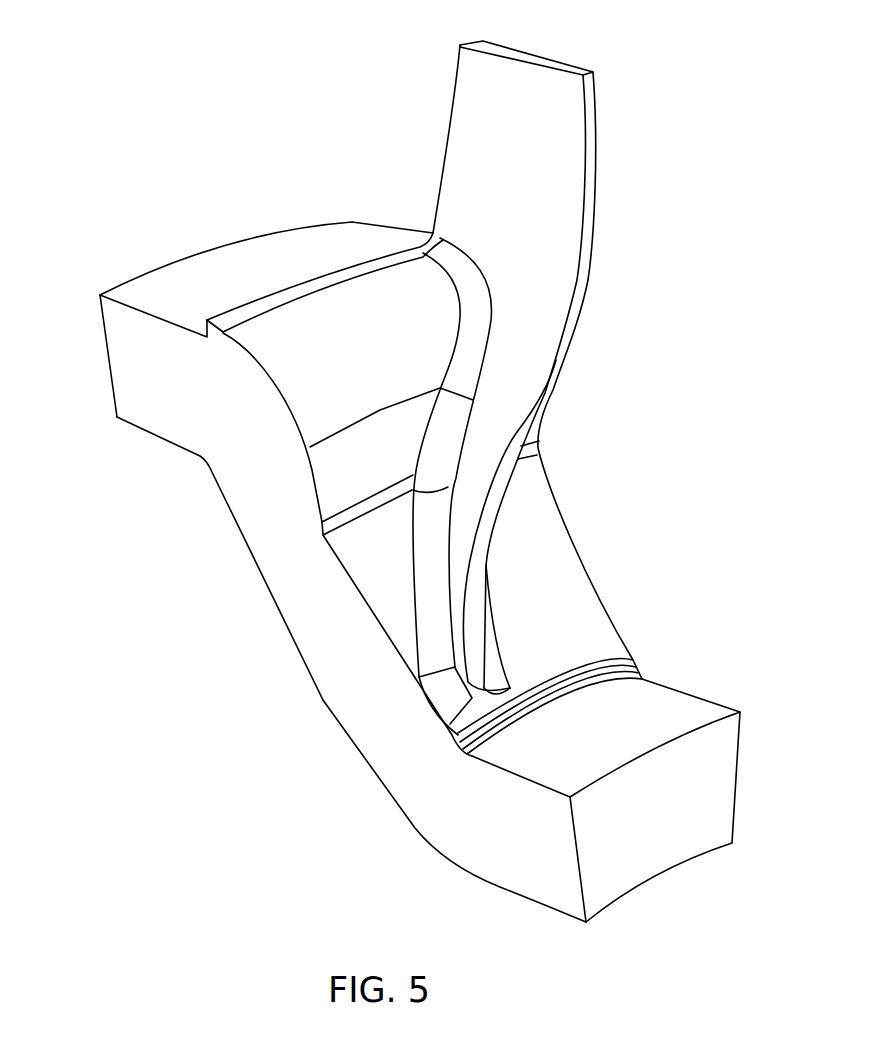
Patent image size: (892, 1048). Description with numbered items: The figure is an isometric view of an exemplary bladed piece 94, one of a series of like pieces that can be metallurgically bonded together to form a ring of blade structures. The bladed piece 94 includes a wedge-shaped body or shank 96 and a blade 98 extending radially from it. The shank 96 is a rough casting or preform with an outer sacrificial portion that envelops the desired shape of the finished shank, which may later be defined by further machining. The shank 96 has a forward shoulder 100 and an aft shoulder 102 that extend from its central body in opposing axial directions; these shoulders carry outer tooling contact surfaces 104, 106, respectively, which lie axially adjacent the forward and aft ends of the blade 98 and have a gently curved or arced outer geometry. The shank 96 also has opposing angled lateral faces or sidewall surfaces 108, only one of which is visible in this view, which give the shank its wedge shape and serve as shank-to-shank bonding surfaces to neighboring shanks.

The bladed piece 94 is at (214, 98).
The shank 96 is at (313, 696).
The blade 98 is at (575, 165).
The forward shoulder 100 is at (117, 372).
The aft shoulder 102 is at (733, 780).
The outer tooling contact surface 104 is at (225, 253).
The outer tooling contact surface 106 is at (680, 697).
The sidewall surface 108 is at (285, 624).